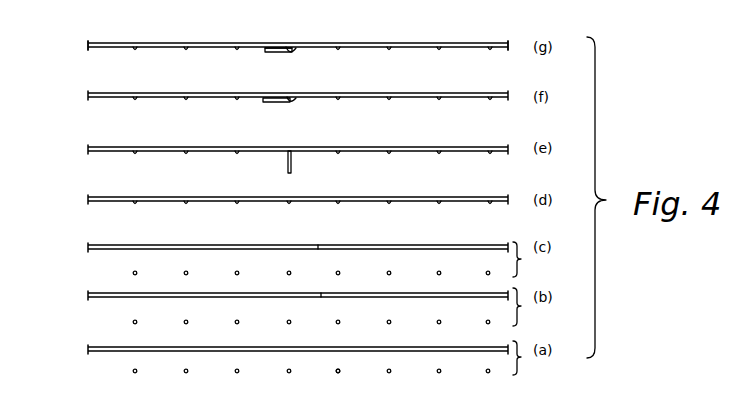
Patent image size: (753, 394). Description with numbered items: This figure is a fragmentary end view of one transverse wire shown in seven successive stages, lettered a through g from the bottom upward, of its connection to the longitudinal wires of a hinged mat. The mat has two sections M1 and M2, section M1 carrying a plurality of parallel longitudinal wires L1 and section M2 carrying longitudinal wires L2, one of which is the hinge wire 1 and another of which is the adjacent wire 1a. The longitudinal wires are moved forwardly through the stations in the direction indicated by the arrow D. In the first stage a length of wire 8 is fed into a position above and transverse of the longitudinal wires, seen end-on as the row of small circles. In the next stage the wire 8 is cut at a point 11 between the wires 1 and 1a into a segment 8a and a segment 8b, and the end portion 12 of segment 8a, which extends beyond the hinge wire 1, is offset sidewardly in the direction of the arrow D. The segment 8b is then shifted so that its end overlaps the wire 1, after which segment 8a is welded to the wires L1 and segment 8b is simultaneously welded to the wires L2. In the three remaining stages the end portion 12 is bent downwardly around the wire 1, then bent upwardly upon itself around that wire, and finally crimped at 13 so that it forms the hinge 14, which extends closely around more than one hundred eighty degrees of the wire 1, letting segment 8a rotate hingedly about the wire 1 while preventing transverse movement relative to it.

The hinge wire 1 is at (291, 53).
The longitudinal wire 1a is at (340, 373).
The wire 8 is at (224, 41).
The segment 8a is at (203, 197).
The segment 8b is at (417, 197).
The point 11 is at (318, 292).
The end portion 12 is at (274, 104).
The crimp 13 is at (276, 53).
The hinge 14 is at (289, 44).
The longitudinal wires L1 is at (237, 51).
The longitudinal wires L2 is at (300, 47).
The section M1 is at (93, 36).
The section M2 is at (457, 41).
The arrow D is at (42, 151).